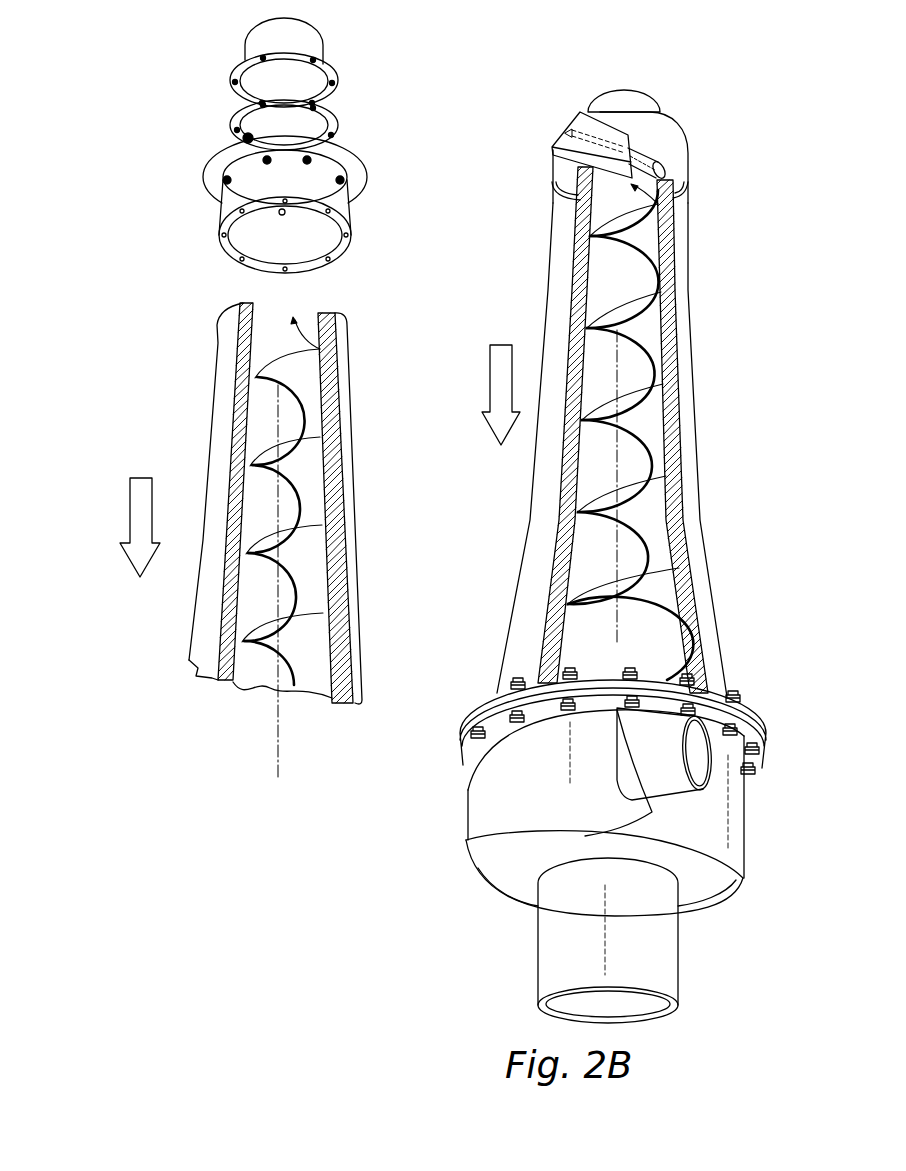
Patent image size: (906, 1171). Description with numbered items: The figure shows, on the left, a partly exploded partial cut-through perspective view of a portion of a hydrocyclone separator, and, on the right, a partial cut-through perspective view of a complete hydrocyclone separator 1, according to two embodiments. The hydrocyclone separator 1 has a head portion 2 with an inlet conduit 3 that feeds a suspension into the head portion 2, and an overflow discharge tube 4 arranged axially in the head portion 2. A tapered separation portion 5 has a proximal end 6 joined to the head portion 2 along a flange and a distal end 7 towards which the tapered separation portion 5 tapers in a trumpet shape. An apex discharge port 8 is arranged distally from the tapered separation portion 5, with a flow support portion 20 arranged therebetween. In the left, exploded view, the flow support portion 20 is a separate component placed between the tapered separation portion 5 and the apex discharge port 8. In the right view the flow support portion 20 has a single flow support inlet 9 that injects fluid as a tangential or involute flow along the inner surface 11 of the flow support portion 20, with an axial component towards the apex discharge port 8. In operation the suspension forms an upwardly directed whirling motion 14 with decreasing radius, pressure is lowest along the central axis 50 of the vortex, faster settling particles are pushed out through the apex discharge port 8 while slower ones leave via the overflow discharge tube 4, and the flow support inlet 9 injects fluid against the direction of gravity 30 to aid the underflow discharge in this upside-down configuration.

The hydrocyclone separator 1 is at (554, 66).
The head portion 2 is at (384, 851).
The inlet conduit 3 is at (657, 757).
The overflow discharge tube 4 is at (656, 958).
The tapered separation portion 5 is at (351, 549).
The proximal end 6 is at (475, 656).
The distal end 7 is at (197, 398).
The apex discharge port 8 is at (321, 43).
The flow support inlet 9 is at (336, 236).
The inner surface 11 is at (260, 605).
The upwardly directed whirling motion 14 is at (663, 630).
The flow support portion 20 is at (402, 104).
The direction of gravity 30 is at (129, 508).
The central axis 50 is at (279, 513).